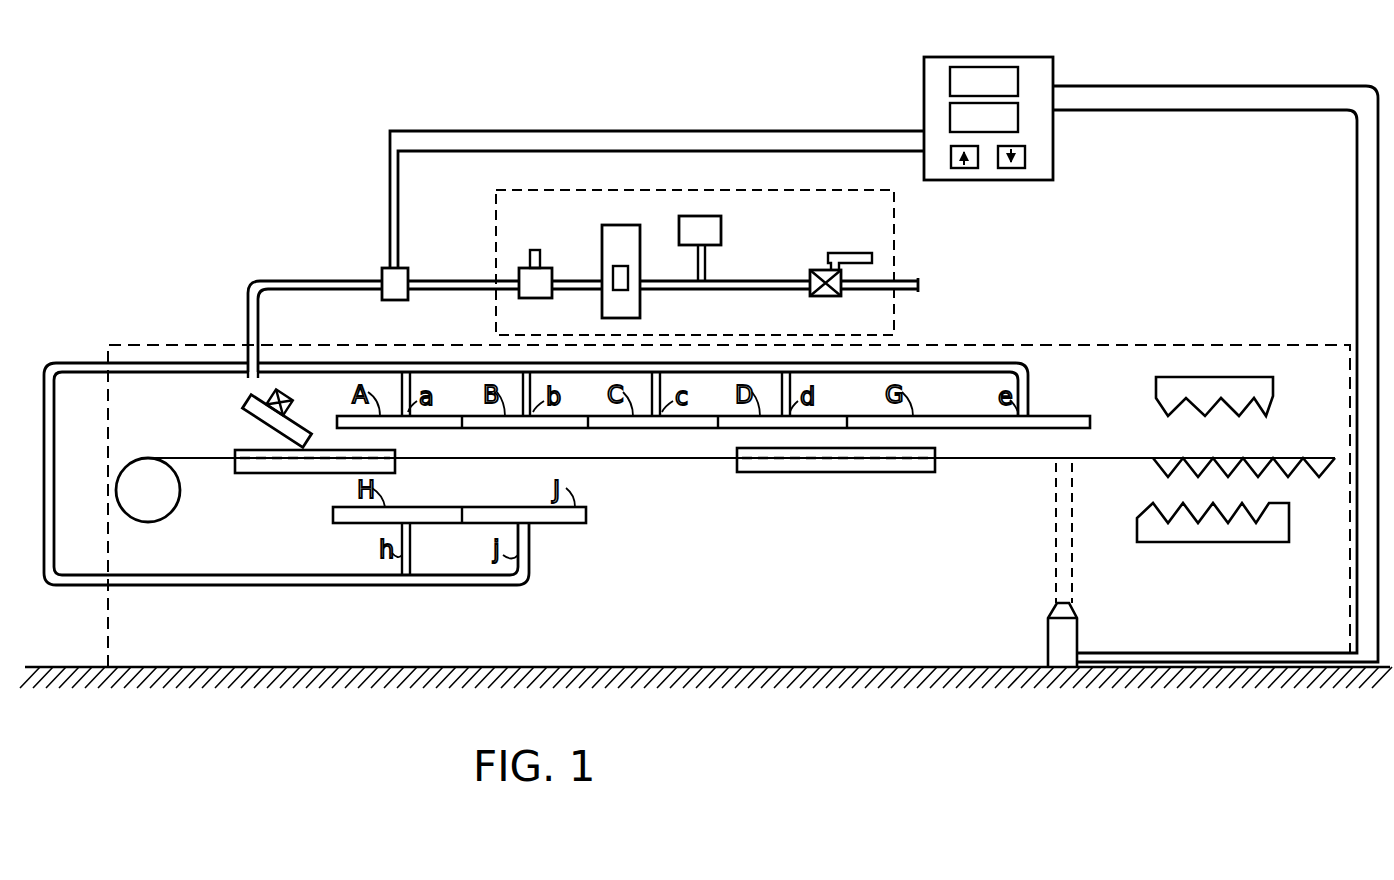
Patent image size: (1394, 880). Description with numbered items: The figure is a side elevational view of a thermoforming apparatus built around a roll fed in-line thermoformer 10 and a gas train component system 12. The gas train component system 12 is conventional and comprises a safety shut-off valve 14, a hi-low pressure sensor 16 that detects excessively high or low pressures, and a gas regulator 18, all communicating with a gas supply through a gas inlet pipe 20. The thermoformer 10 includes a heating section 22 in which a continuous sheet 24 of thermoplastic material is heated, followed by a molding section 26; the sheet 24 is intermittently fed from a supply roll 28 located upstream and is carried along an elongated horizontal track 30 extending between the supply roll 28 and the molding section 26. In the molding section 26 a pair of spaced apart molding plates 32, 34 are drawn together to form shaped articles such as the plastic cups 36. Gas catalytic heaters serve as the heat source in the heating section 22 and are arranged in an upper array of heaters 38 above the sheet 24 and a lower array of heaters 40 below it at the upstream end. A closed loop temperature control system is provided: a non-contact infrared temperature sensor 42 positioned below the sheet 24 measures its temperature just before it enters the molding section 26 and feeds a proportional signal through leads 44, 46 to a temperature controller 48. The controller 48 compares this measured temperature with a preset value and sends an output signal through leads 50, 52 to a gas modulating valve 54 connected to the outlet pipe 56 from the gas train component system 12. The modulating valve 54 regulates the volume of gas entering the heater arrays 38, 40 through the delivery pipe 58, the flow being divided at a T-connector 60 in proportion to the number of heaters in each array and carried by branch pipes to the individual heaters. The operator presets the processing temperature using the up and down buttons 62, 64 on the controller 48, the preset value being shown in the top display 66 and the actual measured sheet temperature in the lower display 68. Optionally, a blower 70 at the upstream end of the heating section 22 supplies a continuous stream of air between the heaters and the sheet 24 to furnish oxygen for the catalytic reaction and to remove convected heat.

The roll fed in-line thermoformer 10 is at (1166, 340).
The gas train component system 12 is at (490, 238).
The safety shut-off valve 14 is at (816, 272).
The hi-low pressure sensor 16 is at (721, 232).
The gas regulator 18 is at (548, 268).
The gas inlet pipe 20 is at (900, 285).
The heating section 22 is at (772, 580).
The continuous sheet 24 is at (213, 457).
The molding section 26 is at (1262, 613).
The supply roll 28 is at (172, 494).
The elongated horizontal track 30 is at (270, 466).
The molding plate 32 is at (1188, 384).
The molding plate 34 is at (1221, 532).
The plastic cups 36 is at (1293, 458).
The upper array of heaters 38 is at (1036, 408).
The lower array of heaters 40 is at (548, 536).
The non-contact infrared temperature sensor 42 is at (1048, 629).
The lead 44 is at (1166, 88).
The lead 46 is at (1232, 113).
The temperature controller 48 is at (932, 58).
The lead 50 is at (530, 131).
The lead 52 is at (555, 151).
The gas modulating valve 54 is at (382, 276).
The outlet pipe 56 is at (452, 292).
The delivery pipe 58 is at (248, 323).
The T-connector 60 is at (243, 375).
The up button 62 is at (968, 169).
The down button 64 is at (1018, 168).
The top display 66 is at (1014, 75).
The lower display 68 is at (1015, 118).
The blower 70 is at (292, 431).